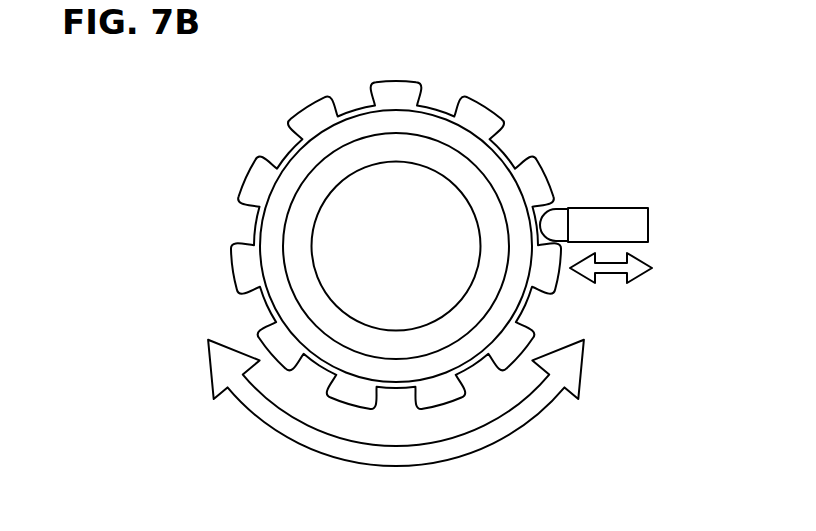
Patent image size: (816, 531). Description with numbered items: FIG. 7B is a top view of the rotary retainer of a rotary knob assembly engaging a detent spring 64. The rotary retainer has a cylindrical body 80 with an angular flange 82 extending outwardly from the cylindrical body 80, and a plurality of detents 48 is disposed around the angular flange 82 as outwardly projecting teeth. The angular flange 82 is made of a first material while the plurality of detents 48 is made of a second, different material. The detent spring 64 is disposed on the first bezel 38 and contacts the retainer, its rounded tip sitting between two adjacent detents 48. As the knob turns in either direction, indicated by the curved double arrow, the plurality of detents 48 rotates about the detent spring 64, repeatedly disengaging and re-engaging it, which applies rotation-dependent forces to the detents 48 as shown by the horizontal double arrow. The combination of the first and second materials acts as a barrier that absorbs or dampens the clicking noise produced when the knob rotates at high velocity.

The plurality of detents 48 is at (226, 260).
The cylindrical body 80 is at (350, 140).
The angular flange 82 is at (276, 205).
The detent spring 64 is at (573, 202).
The first bezel 38 is at (658, 229).